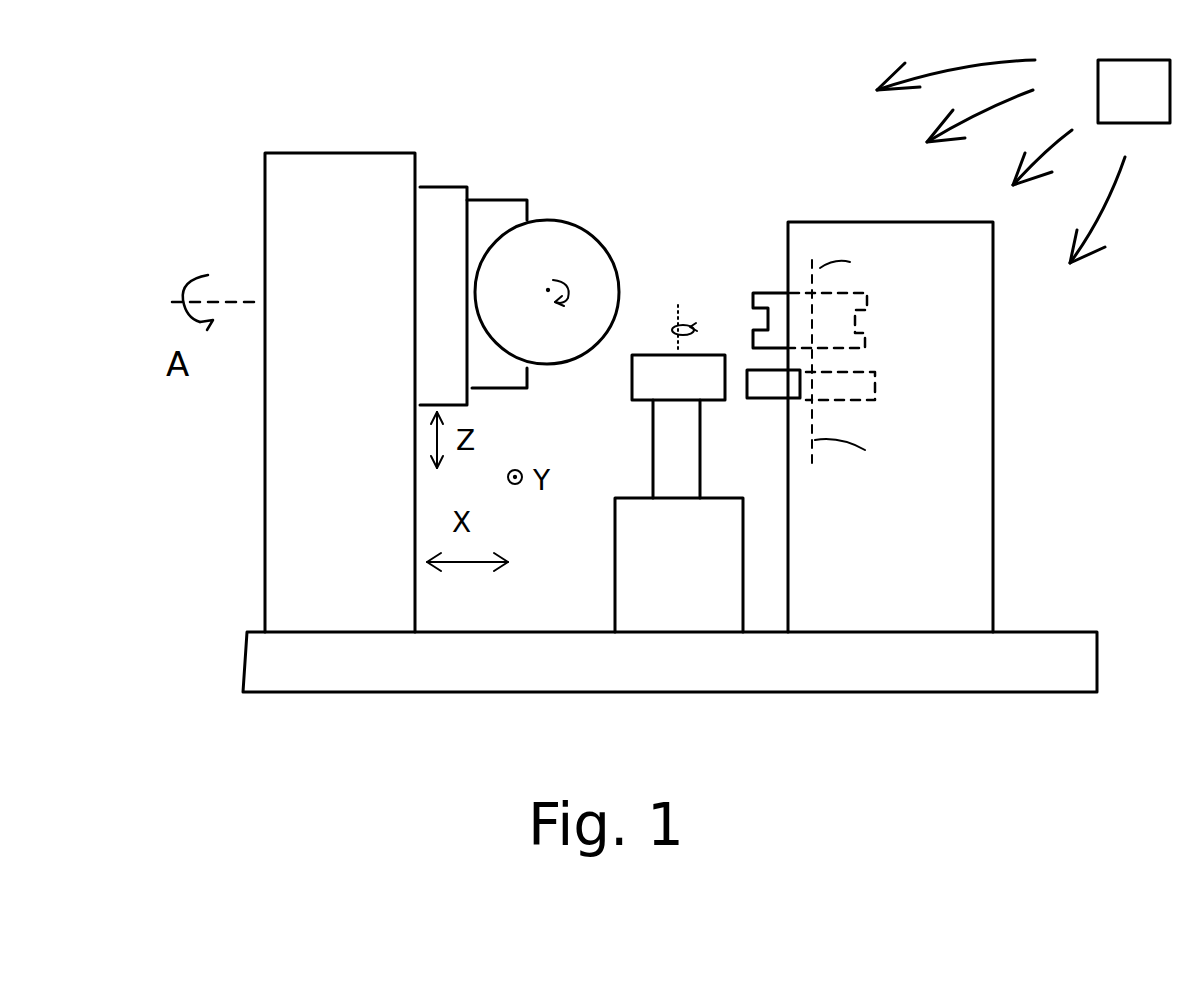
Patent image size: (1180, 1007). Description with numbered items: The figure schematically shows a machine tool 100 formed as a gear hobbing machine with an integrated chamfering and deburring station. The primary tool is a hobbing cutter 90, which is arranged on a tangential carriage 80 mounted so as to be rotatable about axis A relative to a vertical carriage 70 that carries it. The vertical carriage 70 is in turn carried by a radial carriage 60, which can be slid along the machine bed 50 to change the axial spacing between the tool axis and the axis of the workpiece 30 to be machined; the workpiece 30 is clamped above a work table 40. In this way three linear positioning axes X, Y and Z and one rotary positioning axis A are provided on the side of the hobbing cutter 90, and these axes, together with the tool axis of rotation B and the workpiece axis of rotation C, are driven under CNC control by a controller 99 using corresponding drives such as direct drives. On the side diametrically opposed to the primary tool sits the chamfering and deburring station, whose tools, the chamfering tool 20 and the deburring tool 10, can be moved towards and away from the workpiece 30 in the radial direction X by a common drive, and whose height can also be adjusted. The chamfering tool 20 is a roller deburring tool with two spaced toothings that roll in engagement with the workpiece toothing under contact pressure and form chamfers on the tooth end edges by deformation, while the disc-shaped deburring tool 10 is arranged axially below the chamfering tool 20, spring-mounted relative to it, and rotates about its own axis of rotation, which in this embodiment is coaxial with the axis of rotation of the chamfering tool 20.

The deburring tool 10 is at (758, 403).
The chamfering tool 20 is at (778, 310).
The workpiece 30 is at (668, 345).
The work table 40 is at (679, 565).
The machine bed 50 is at (670, 662).
The radial carriage 60 is at (340, 392).
The vertical carriage 70 is at (438, 202).
The tangential carriage 80 is at (488, 217).
The hobbing cutter 90 is at (563, 245).
The controller 99 is at (1048, 161).
The machine tool 100 is at (1128, 424).